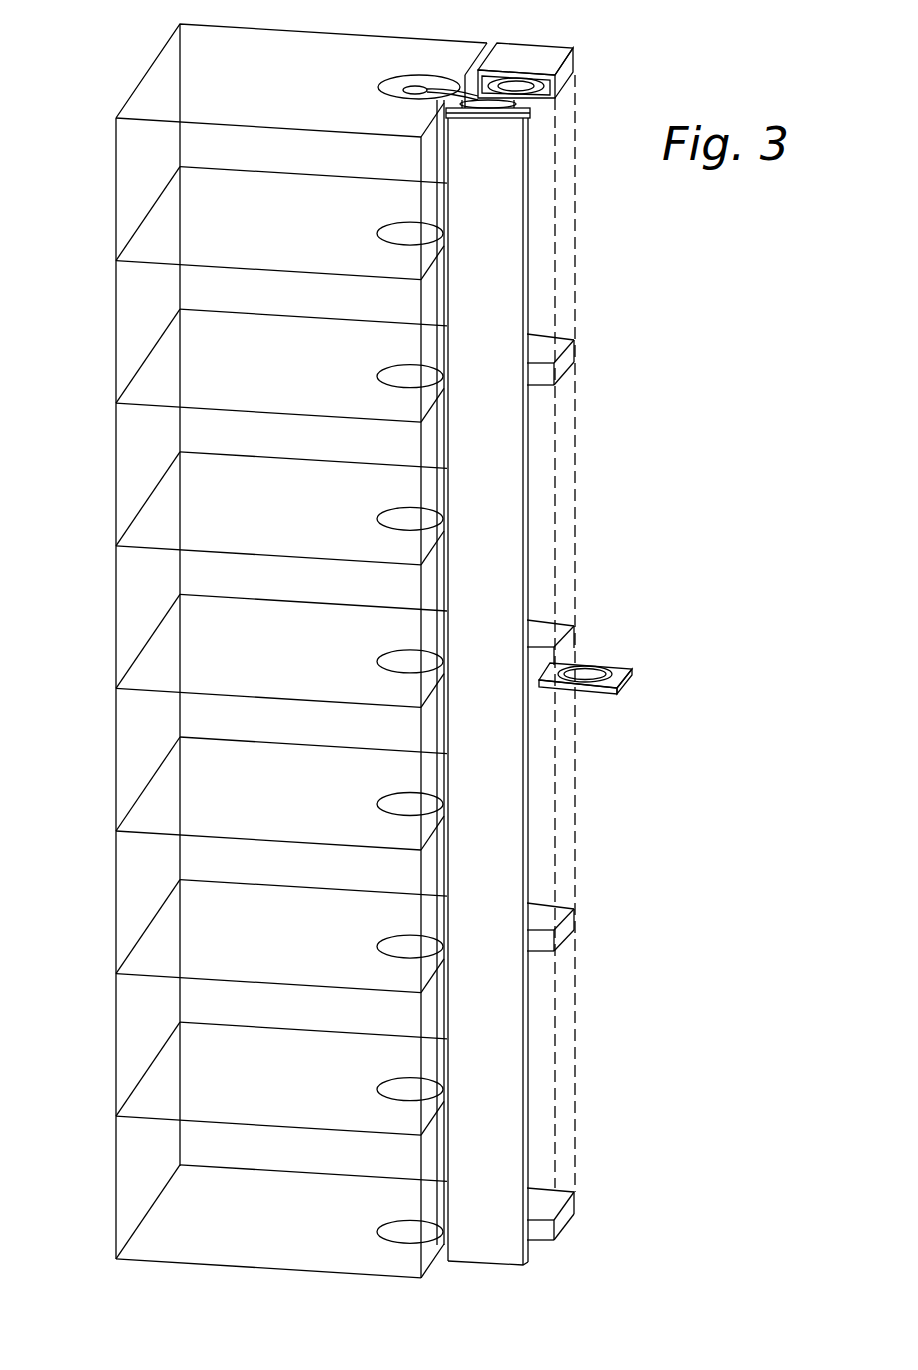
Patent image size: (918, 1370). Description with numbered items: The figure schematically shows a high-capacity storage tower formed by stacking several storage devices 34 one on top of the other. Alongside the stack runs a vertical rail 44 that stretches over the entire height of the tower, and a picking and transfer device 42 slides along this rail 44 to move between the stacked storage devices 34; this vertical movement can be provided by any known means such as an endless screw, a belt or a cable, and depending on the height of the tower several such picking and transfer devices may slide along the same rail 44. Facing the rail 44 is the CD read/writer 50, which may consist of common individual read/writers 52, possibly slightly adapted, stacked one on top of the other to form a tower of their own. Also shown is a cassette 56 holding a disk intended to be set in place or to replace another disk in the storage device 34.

The storage device 34 is at (138, 163).
The picking and transfer device 42 is at (528, 112).
The vertical rail 44 is at (508, 1060).
The CD read/writer 50 is at (581, 141).
The individual read/writer 52 is at (560, 52).
The cassette 56 is at (618, 663).